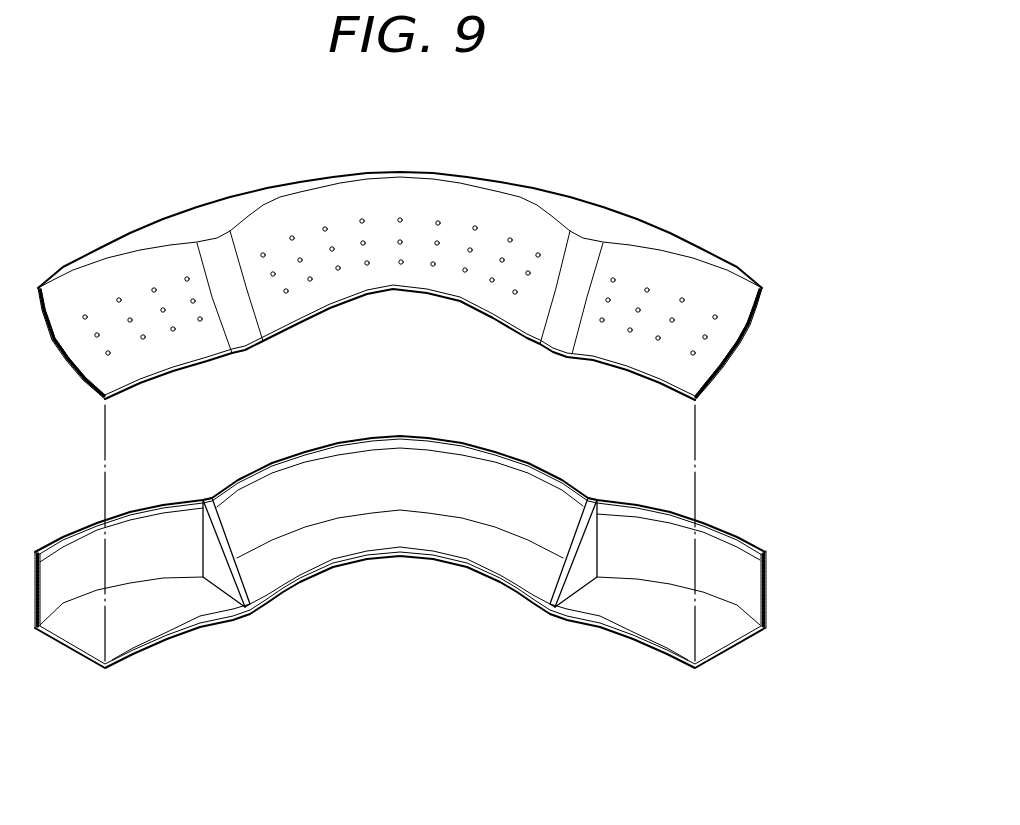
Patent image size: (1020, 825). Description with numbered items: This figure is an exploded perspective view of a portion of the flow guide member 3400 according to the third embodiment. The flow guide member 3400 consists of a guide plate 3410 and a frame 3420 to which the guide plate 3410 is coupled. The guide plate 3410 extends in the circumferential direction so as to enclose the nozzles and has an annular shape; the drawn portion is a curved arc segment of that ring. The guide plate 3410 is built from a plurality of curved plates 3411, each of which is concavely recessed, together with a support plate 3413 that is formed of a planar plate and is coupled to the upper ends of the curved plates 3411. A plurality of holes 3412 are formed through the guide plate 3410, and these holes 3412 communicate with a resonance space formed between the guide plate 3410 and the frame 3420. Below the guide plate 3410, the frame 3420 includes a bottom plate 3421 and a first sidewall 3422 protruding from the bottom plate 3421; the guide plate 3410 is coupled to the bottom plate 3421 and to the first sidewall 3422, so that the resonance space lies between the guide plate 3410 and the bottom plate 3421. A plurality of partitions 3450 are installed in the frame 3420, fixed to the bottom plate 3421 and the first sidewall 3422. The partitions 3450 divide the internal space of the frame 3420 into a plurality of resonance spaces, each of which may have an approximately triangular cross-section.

The flow guide member 3400 is at (797, 396).
The guide plate 3410 is at (573, 173).
The curved plate 3411 is at (130, 277).
The hole 3412 is at (400, 218).
The support plate 3413 is at (205, 220).
The frame 3420 is at (413, 455).
The bottom plate 3421 is at (720, 633).
The first sidewall 3422 is at (767, 587).
The partition 3450 is at (580, 577).